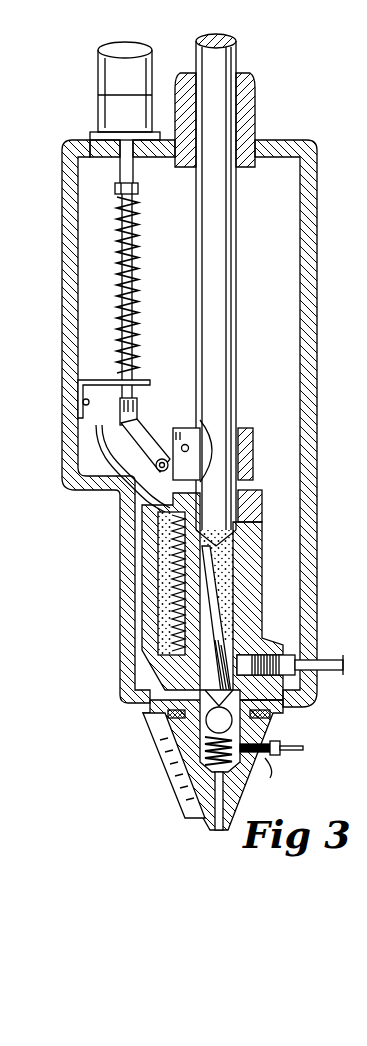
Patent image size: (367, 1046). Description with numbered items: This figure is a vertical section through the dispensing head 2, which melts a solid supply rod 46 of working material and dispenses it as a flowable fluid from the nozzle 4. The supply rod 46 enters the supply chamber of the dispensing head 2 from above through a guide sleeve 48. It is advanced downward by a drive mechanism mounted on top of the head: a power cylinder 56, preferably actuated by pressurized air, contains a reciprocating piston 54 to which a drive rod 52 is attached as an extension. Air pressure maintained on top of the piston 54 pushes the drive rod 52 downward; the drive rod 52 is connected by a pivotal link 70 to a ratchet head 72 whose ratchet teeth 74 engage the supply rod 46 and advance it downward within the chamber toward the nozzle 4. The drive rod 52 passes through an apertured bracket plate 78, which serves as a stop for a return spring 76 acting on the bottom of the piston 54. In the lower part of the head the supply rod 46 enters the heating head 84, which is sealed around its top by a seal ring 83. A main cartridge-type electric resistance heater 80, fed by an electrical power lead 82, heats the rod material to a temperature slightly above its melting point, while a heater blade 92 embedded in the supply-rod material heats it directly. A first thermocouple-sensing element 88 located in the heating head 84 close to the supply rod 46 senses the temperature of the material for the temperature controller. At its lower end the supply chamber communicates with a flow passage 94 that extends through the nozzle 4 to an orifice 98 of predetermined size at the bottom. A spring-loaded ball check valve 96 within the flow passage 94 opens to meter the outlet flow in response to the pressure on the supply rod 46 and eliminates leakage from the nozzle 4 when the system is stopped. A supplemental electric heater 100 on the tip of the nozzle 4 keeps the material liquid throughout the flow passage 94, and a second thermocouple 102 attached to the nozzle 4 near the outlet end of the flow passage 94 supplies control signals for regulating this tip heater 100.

The dispensing head 2 is at (58, 299).
The nozzle 4 is at (245, 802).
The supply rod 46 is at (230, 50).
The guide sleeve 48 is at (258, 107).
The drive rod 52 is at (139, 292).
The reciprocating piston 54 is at (139, 186).
The power cylinder 56 is at (102, 81).
The pivotal link 70 is at (140, 424).
The ratchet head 72 is at (250, 428).
The ratchet teeth 74 is at (206, 430).
The return spring 76 is at (137, 270).
The apertured bracket plate 78 is at (142, 381).
The electric resistance heater 80 is at (165, 552).
The electrical power lead 82 is at (100, 455).
The seal ring 83 is at (262, 496).
The heating head 84 is at (256, 566).
The thermocouple-sensing element 88 is at (297, 657).
The heater blade 92 is at (240, 642).
The flow passage 94 is at (272, 746).
The spring-loaded ball check valve 96 is at (152, 738).
The orifice 98 is at (218, 829).
The supplemental electric heater 100 is at (165, 782).
The thermocouple 102 is at (270, 766).